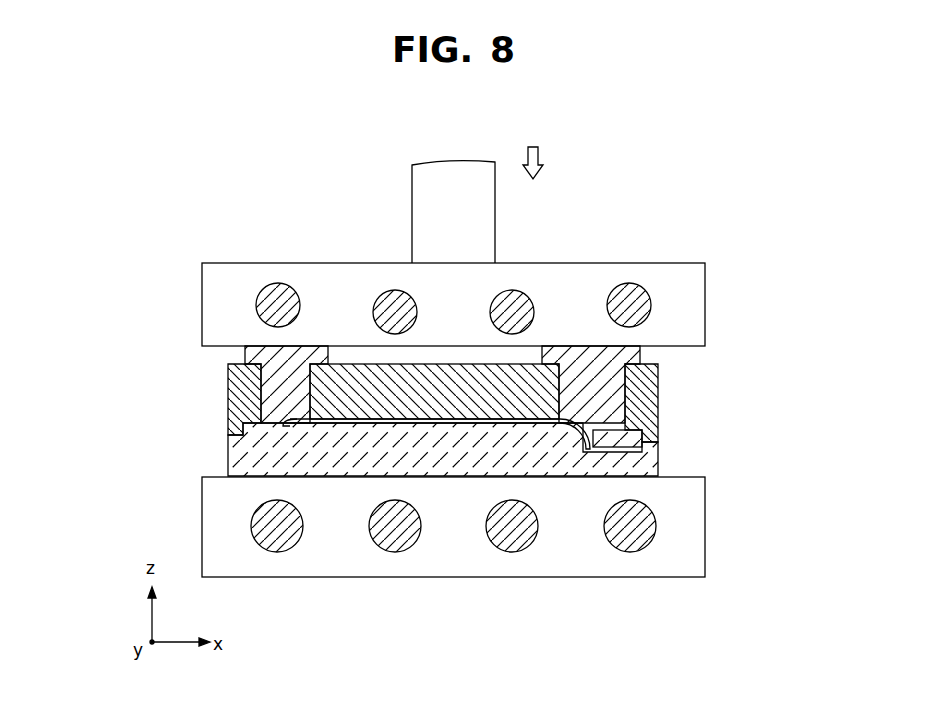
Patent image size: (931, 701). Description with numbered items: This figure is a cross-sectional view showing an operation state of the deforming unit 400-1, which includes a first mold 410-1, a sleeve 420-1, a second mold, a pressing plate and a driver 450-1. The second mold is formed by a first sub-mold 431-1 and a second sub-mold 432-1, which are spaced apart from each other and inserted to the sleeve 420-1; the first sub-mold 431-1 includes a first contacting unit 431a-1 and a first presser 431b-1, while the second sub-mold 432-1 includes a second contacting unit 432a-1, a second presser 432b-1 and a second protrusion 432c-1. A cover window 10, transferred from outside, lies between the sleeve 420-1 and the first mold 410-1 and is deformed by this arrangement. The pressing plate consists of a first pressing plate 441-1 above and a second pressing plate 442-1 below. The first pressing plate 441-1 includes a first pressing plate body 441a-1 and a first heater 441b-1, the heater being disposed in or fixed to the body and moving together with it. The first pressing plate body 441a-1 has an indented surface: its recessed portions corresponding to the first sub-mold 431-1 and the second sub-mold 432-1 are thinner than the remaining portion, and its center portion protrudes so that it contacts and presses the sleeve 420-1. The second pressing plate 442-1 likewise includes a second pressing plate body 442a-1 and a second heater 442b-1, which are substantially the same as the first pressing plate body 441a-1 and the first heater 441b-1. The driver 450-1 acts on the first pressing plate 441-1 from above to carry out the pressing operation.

The deforming unit 400-1 is at (147, 193).
The driver 450-1 is at (490, 212).
The sleeve 420-1 is at (370, 366).
The first pressing plate 441-1 is at (747, 197).
The first pressing plate body 441a-1 is at (683, 283).
The first heater 441b-1 is at (632, 285).
The first sub-mold 431-1 is at (99, 355).
The first contacting unit 431a-1 is at (245, 354).
The first presser 431b-1 is at (262, 396).
The second sub-mold 432-1 is at (824, 355).
The second contacting unit 432a-1 is at (640, 357).
The second presser 432b-1 is at (625, 412).
The second protrusion 432c-1 is at (600, 448).
The first mold 410-1 is at (228, 457).
The cover window 10 is at (447, 430).
The second pressing plate 442-1 is at (698, 648).
The second pressing plate body 442a-1 is at (677, 563).
The second heater 442b-1 is at (627, 547).